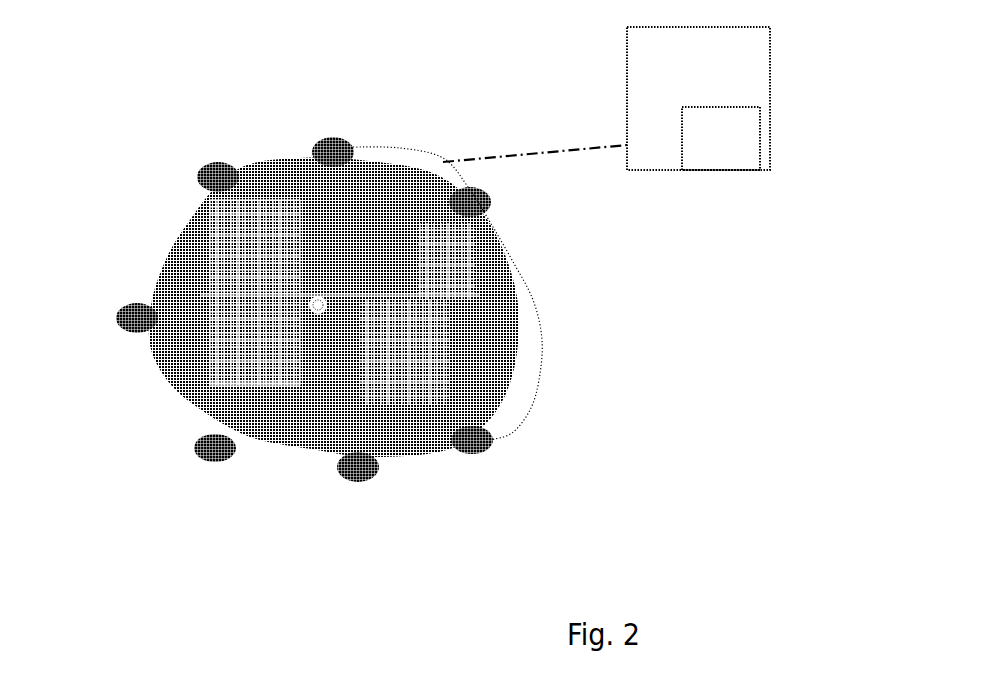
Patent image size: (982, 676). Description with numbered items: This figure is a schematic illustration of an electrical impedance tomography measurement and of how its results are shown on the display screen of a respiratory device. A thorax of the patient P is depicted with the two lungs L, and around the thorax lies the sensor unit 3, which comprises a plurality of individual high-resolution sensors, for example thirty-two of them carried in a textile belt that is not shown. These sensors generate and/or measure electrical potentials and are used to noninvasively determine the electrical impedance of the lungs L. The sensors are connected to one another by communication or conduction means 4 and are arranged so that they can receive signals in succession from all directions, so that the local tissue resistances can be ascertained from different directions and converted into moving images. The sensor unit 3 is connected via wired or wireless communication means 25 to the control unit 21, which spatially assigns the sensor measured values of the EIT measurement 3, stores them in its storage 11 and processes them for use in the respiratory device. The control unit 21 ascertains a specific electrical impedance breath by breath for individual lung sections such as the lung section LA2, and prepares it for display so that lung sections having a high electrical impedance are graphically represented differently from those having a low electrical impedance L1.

The patient P is at (185, 258).
The lungs L is at (223, 315).
The lung sections having a low electrical impedance L1 is at (248, 387).
The lung section LA2 is at (418, 323).
The sensor unit 3 is at (395, 105).
The communication or conduction means 4 is at (535, 302).
The communication means 25 is at (520, 157).
The control unit 21 is at (742, 83).
The storage 11 is at (742, 132).